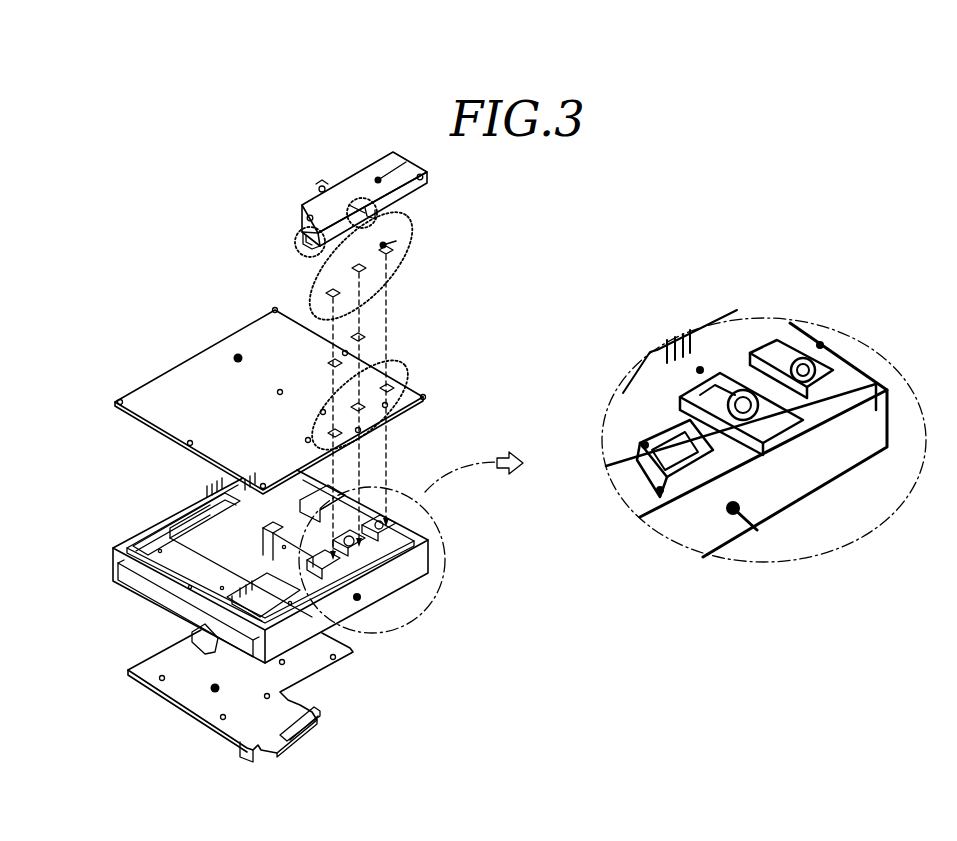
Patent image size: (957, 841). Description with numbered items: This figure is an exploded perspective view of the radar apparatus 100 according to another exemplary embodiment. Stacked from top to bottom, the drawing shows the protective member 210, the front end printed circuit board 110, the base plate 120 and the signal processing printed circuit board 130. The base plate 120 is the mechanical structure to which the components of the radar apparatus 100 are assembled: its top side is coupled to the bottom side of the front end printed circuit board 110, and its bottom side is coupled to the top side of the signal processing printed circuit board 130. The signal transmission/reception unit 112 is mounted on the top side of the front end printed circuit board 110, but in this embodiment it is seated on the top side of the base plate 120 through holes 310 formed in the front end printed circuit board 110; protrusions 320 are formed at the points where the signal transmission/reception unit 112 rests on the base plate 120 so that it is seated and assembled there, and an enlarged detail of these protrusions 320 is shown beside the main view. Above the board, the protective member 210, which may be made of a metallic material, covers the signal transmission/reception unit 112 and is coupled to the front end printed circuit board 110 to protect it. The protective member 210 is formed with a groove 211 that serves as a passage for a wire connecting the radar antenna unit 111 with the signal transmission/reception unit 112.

The radar apparatus 100 is at (159, 161).
The front end printed circuit board 110 is at (425, 397).
The radar antenna unit 111 is at (350, 200).
The signal transmission/reception unit 112 is at (414, 236).
The base plate 120 is at (427, 556).
The signal processing printed circuit board 130 is at (322, 720).
The protective member 210 is at (430, 181).
The groove 211 is at (297, 237).
The holes 310 is at (405, 374).
The protrusions 320 is at (665, 470).